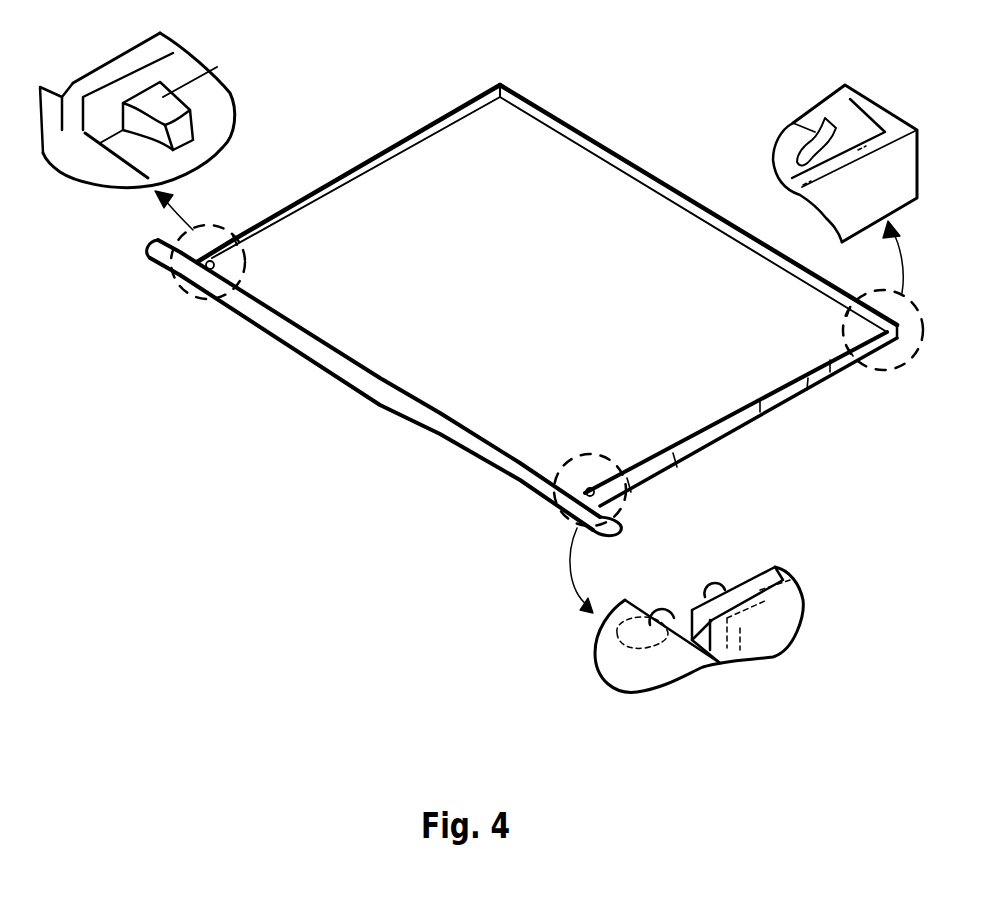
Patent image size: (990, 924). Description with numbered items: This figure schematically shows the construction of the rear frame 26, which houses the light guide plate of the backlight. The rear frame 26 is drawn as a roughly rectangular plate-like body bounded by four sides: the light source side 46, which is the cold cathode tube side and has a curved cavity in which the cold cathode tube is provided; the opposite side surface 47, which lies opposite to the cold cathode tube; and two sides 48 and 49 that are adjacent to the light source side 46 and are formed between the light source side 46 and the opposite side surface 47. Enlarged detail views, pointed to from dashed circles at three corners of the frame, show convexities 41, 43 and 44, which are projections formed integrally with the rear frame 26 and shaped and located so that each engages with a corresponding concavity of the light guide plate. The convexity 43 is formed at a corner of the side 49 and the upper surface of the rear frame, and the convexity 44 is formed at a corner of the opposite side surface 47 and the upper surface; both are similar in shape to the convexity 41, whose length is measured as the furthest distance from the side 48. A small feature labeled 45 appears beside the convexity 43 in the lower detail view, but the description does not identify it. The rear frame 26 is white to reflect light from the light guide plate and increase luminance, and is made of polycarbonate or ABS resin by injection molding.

The rear frame 26 is at (547, 305).
The convexity 41 is at (160, 100).
The convexity 43 is at (720, 580).
The convexity 44 is at (833, 140).
The bump 45 is at (658, 610).
The light source side 46 is at (370, 388).
The opposite side surface 47 is at (688, 187).
The side 48 is at (356, 167).
The side 49 is at (750, 418).